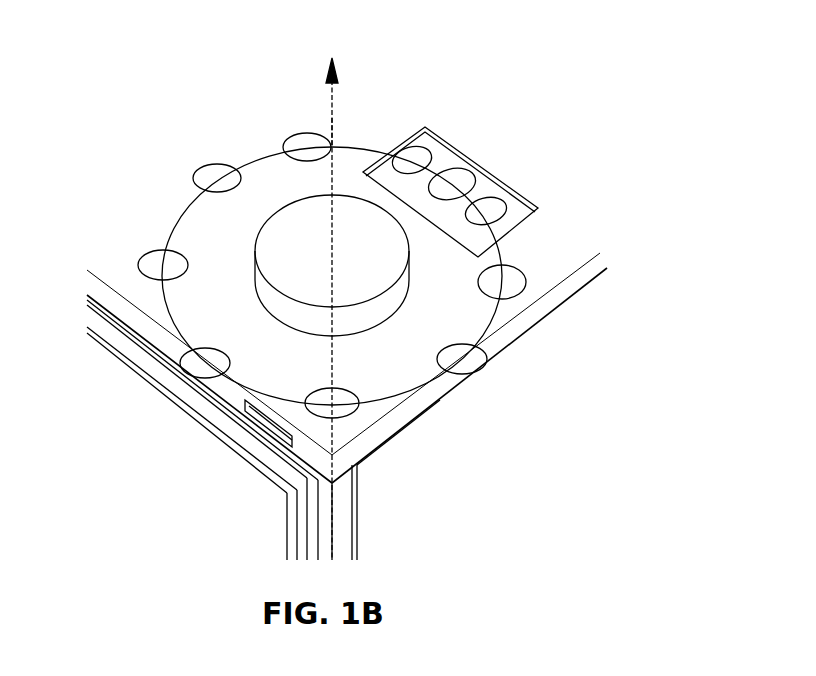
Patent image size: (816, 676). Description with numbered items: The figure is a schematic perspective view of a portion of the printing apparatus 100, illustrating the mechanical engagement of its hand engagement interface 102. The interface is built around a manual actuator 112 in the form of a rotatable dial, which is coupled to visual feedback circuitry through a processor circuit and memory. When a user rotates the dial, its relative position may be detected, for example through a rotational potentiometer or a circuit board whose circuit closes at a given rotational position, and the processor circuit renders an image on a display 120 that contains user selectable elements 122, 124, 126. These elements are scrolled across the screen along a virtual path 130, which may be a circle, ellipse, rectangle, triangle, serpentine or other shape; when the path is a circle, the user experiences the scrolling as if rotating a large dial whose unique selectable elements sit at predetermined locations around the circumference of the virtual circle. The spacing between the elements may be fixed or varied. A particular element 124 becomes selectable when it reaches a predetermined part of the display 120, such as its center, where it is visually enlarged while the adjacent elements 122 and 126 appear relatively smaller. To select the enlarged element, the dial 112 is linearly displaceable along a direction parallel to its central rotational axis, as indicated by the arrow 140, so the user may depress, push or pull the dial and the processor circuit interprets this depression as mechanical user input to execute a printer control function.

The printing apparatus 100 is at (500, 244).
The hand engagement interface 102 is at (368, 38).
The manual actuator 112 is at (338, 282).
The display 120 is at (509, 183).
The user selectable element 122 is at (414, 150).
The user selectable element 124 is at (450, 172).
The user selectable element 126 is at (500, 200).
The virtual path 130 is at (178, 222).
The arrow 140 is at (334, 118).